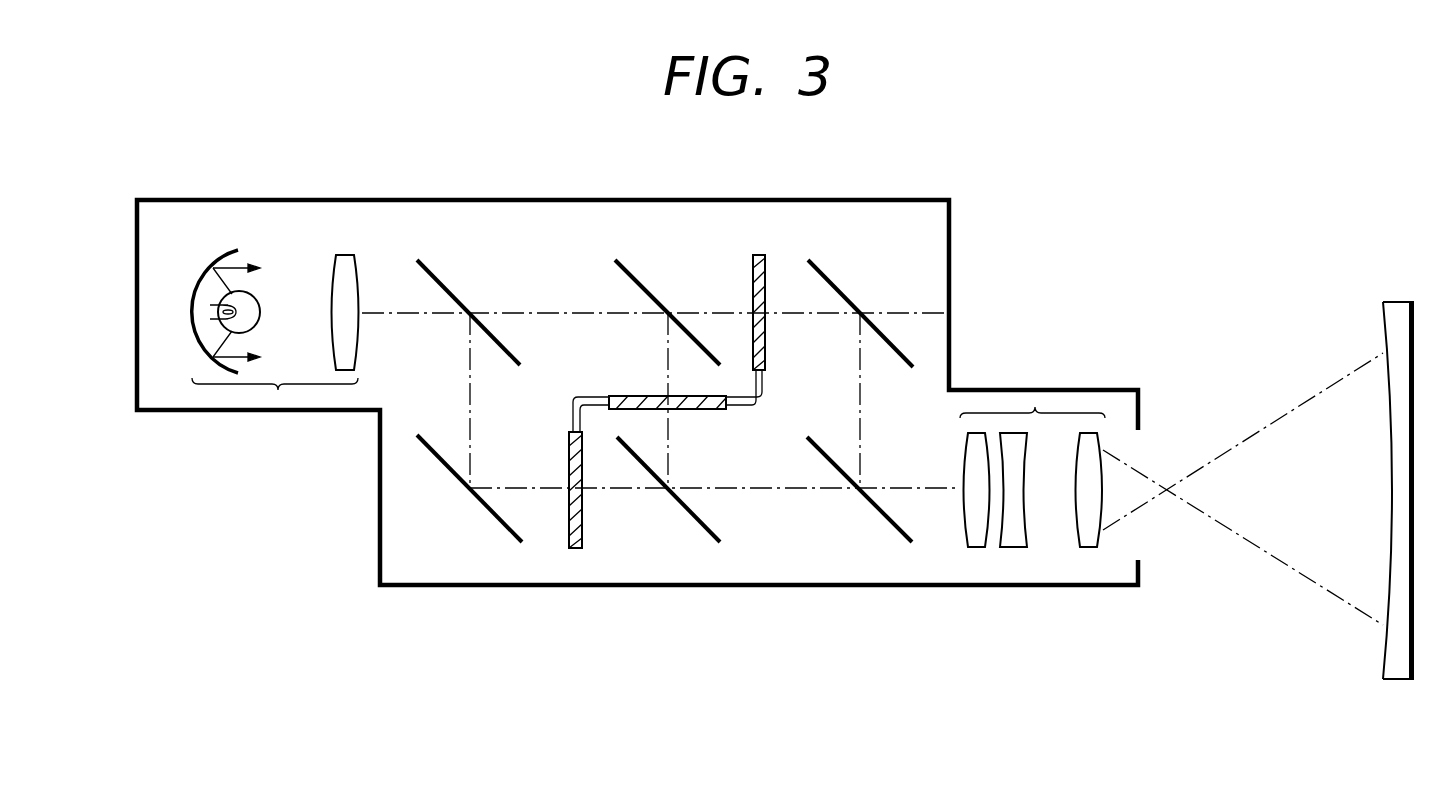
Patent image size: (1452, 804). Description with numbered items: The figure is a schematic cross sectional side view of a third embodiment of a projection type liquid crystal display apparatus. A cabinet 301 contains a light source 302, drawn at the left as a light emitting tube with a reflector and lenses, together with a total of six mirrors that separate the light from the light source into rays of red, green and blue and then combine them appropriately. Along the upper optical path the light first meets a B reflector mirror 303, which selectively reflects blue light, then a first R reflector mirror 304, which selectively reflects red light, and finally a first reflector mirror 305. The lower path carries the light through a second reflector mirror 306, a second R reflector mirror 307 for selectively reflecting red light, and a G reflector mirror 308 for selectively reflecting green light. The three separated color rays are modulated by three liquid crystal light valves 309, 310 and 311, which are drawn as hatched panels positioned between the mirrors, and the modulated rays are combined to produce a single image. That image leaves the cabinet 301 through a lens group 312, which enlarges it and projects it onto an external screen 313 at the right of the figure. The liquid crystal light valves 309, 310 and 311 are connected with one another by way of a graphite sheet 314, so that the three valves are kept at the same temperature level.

The cabinet 301 is at (866, 199).
The light source 302 is at (278, 392).
The B reflector mirror 303 is at (456, 298).
The first R reflector mirror 304 is at (656, 298).
The first reflector mirror 305 is at (846, 298).
The second reflector mirror 306 is at (490, 511).
The second R reflector mirror 307 is at (688, 512).
The G reflector mirror 308 is at (878, 511).
The liquid crystal light valve 309 is at (700, 410).
The liquid crystal light valve 310 is at (759, 255).
The liquid crystal light valve 311 is at (582, 503).
The lens group 312 is at (1035, 405).
The external screen 313 is at (1395, 302).
The graphite sheet 314 is at (763, 394).